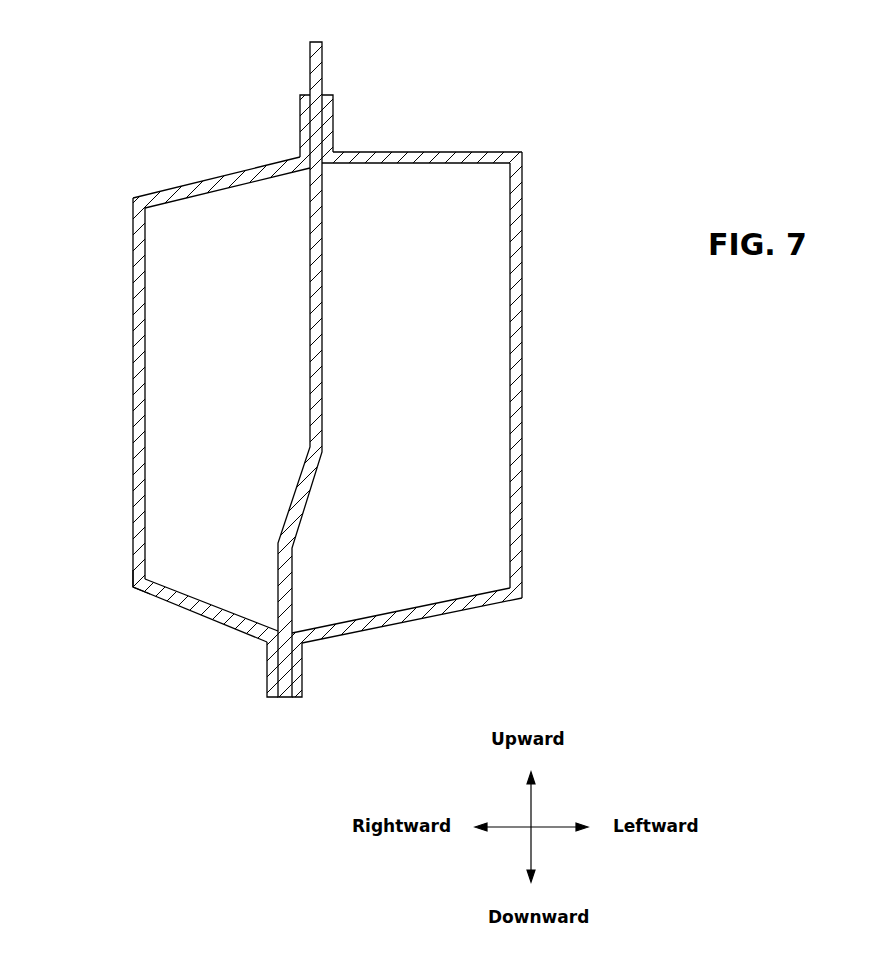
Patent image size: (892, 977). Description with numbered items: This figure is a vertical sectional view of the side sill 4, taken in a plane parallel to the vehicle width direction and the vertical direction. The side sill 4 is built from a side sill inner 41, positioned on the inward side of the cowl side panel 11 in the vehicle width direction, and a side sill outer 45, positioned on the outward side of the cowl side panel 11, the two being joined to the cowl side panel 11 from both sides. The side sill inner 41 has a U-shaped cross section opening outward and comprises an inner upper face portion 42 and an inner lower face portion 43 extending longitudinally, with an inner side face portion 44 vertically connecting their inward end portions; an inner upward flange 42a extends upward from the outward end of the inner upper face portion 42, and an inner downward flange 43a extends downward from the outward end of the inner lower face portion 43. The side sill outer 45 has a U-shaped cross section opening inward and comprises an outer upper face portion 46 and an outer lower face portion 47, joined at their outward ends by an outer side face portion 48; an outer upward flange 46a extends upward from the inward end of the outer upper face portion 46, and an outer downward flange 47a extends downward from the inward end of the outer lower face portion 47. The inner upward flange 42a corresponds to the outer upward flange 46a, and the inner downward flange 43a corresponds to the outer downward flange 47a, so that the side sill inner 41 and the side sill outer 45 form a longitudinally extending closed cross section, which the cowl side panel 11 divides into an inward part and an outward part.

The side sill 4 is at (175, 155).
The cowl side panel 11 is at (310, 488).
The side sill inner 41 is at (522, 152).
The inner upper face portion 42 is at (408, 150).
The inner upward flange 42a is at (333, 127).
The inner lower face portion 43 is at (405, 617).
The inner downward flange 43a is at (303, 658).
The inner side face portion 44 is at (517, 372).
The side sill outer 45 is at (135, 583).
The outer upper face portion 46 is at (228, 173).
The outer upward flange 46a is at (300, 123).
The outer lower face portion 47 is at (207, 617).
The outer downward flange 47a is at (268, 672).
The outer side face portion 48 is at (135, 410).